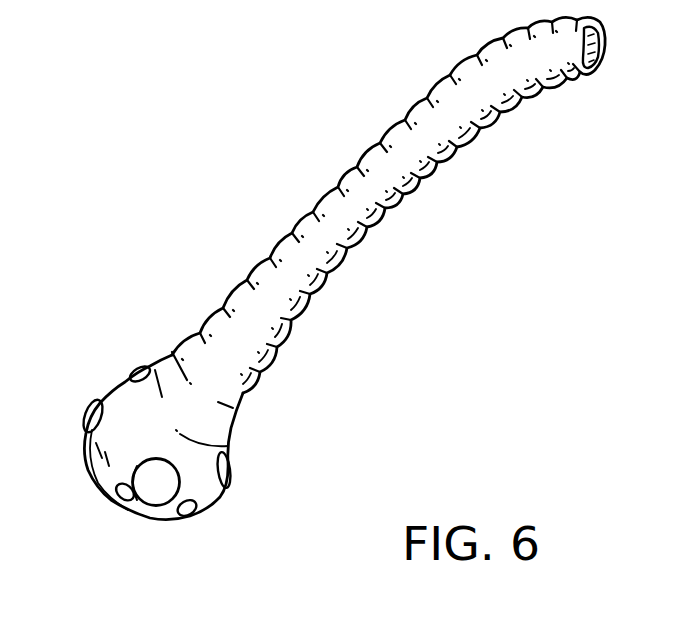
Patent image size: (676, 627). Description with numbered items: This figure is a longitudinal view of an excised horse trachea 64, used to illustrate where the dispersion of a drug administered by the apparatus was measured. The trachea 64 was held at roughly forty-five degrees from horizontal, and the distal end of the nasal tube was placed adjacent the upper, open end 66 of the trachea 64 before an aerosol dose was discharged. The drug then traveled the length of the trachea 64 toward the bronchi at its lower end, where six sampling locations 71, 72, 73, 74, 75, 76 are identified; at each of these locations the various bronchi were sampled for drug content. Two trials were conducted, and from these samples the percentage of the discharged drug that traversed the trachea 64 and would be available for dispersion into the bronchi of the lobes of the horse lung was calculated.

The trachea 64 is at (343, 164).
The upper (open) end of the trachea 66 is at (600, 57).
The sampling location 71 is at (160, 488).
The sampling location 72 is at (128, 500).
The sampling location 73 is at (187, 518).
The sampling location 74 is at (229, 467).
The sampling location 75 is at (88, 414).
The sampling location 76 is at (139, 368).